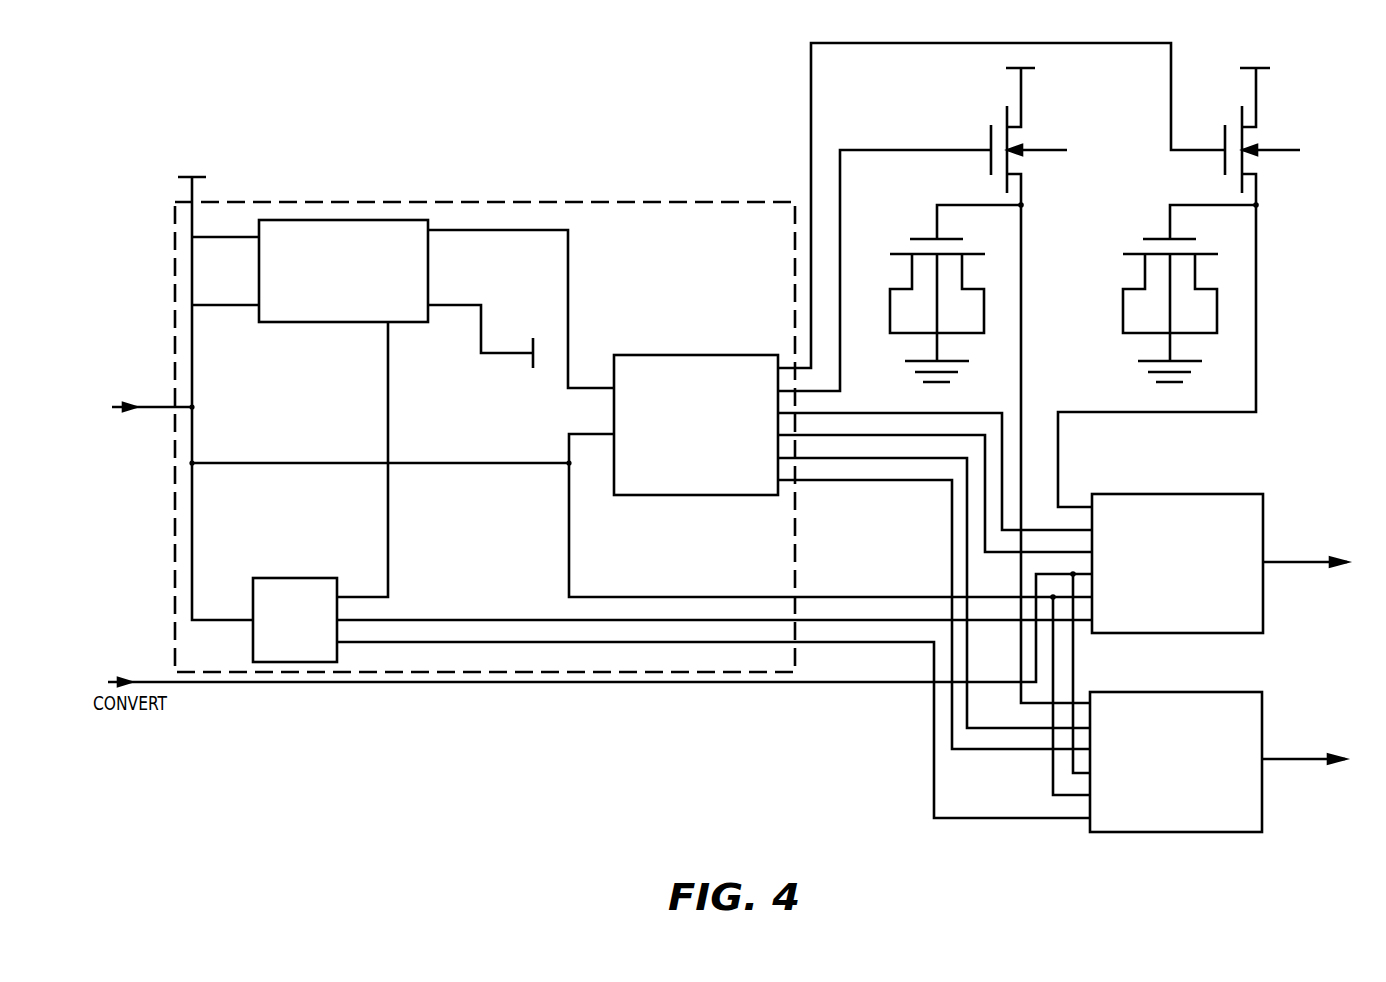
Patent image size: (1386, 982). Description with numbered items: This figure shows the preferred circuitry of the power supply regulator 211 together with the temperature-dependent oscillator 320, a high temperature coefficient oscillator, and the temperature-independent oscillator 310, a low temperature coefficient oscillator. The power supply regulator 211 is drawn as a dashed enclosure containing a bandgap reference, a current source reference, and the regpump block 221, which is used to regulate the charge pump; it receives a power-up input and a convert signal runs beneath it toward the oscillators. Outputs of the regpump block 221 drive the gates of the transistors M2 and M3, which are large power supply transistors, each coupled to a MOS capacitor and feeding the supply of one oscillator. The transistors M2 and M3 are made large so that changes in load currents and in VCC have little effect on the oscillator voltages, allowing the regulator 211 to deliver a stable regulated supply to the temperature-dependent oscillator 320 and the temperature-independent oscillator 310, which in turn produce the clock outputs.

The power supply regulator 211 is at (500, 202).
The regpump block 221 is at (660, 355).
The temperature-dependent oscillator 320 is at (1215, 493).
The temperature-independent oscillator 310 is at (1215, 690).
The power supply transistor M2 is at (1008, 127).
The power supply transistor M3 is at (1243, 125).